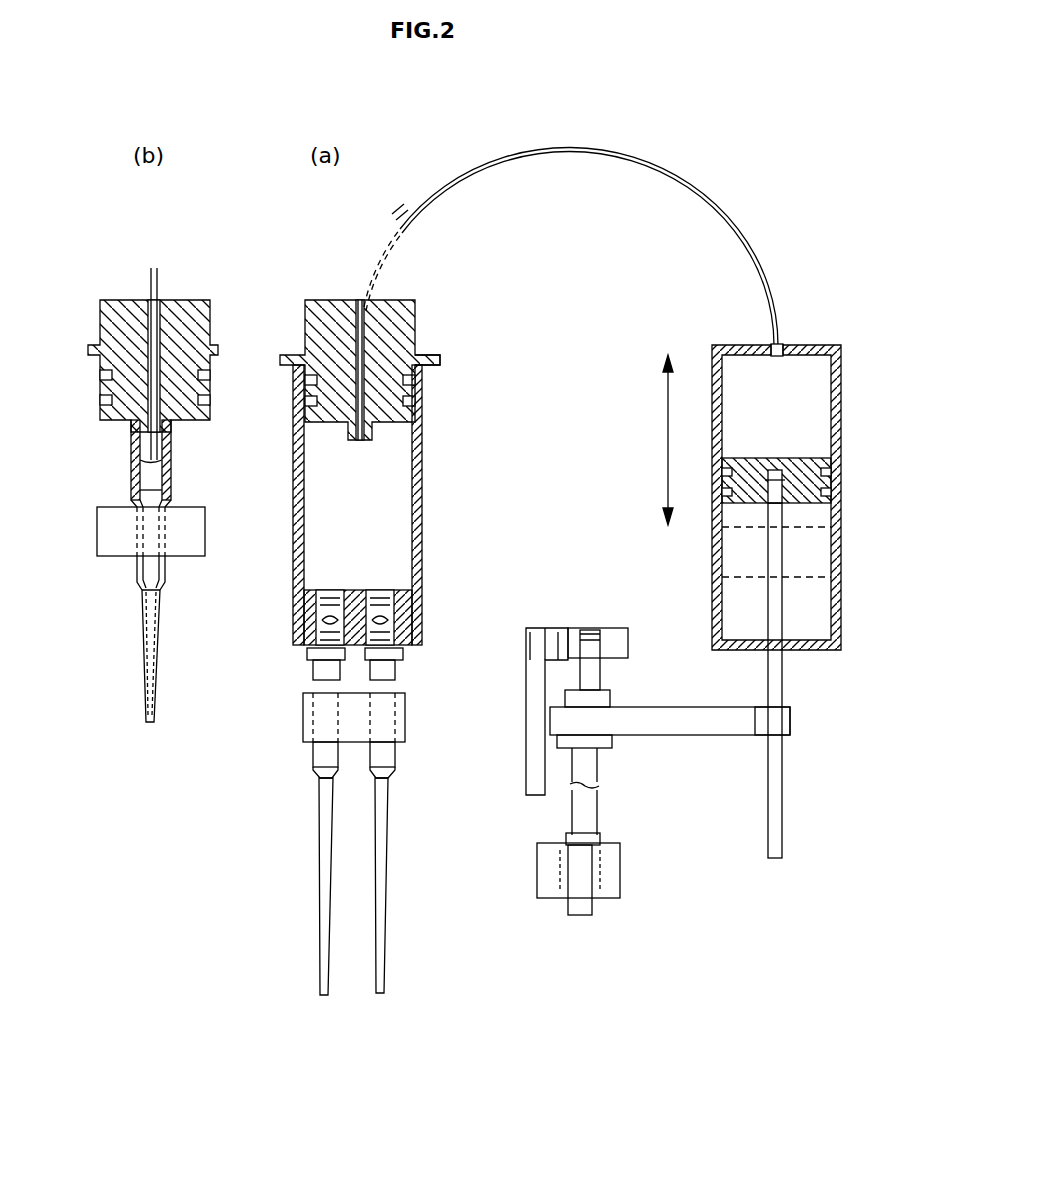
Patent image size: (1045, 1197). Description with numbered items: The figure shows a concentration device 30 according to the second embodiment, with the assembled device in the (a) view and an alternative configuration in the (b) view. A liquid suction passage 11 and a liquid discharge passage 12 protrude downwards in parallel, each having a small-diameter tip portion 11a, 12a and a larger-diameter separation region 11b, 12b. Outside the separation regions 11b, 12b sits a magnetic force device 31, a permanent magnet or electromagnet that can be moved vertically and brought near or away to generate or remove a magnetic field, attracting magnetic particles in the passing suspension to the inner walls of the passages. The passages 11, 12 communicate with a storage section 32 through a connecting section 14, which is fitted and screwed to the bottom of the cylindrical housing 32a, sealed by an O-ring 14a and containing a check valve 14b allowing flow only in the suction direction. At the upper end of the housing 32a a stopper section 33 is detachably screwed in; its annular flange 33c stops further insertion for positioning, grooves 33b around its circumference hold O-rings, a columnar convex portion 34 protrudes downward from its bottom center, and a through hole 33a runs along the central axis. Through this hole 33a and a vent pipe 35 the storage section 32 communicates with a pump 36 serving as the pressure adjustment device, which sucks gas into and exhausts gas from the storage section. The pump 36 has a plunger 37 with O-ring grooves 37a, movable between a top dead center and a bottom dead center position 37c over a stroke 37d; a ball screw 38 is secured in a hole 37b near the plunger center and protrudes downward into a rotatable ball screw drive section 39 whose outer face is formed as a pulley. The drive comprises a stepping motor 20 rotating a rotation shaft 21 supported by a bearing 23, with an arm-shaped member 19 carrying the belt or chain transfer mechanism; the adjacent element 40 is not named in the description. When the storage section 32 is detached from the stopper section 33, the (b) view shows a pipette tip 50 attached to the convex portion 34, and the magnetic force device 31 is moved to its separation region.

The liquid suction passage 11 is at (277, 821).
The tip portion 11a is at (312, 902).
The separation region 11b is at (318, 758).
The liquid discharge passage 12 is at (424, 820).
The tip portion 12a is at (396, 902).
The separation region 12b is at (390, 758).
The connecting section 14 is at (353, 627).
The O-ring 14a is at (305, 612).
The check valve 14b is at (412, 630).
The arm-shaped member 19 is at (675, 735).
The stepping motor 20 is at (620, 876).
The rotation shaft 21 is at (597, 804).
The bearing 23 is at (630, 642).
The concentration device 30 is at (363, 623).
The magnetic force device 31 is at (195, 532).
The storage section 32 is at (365, 530).
The cylindrical housing 32a is at (422, 470).
The stopper section 33 is at (143, 300).
The through hole 33a is at (372, 328).
The grooves 33b is at (415, 402).
The annular flange 33c is at (420, 352).
The columnar convex portion 34 is at (133, 455).
The vent pipe 35 is at (568, 145).
The pump 36 is at (841, 372).
The plunger 37 is at (806, 490).
The grooves 37a is at (832, 482).
The hole 37b is at (800, 495).
The bottom dead center position 37c is at (648, 553).
The stroke 37d is at (647, 440).
The ball screw 38 is at (782, 810).
The ball screw drive section 39 is at (790, 735).
The guide bar 40 is at (528, 722).
The pipette tip 50 is at (148, 652).